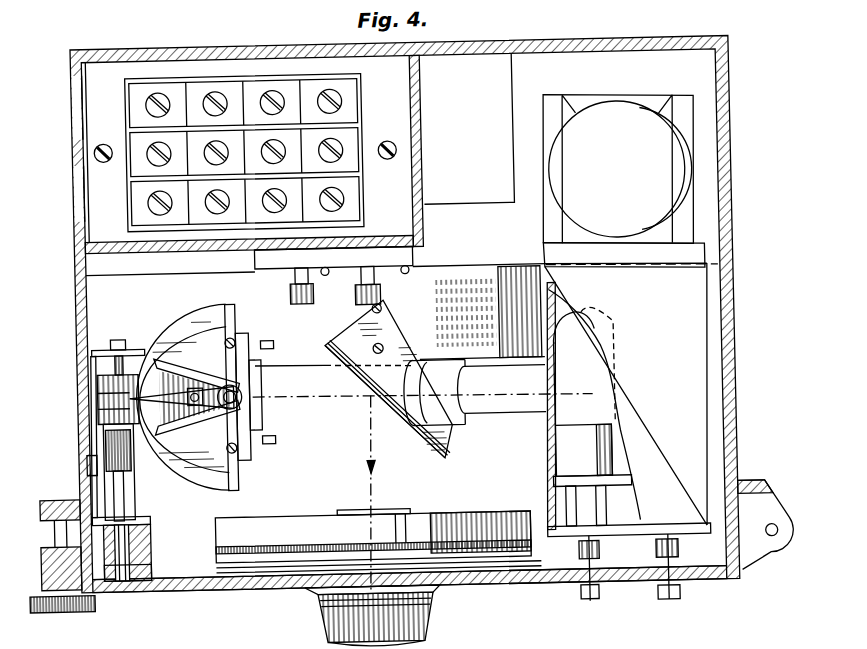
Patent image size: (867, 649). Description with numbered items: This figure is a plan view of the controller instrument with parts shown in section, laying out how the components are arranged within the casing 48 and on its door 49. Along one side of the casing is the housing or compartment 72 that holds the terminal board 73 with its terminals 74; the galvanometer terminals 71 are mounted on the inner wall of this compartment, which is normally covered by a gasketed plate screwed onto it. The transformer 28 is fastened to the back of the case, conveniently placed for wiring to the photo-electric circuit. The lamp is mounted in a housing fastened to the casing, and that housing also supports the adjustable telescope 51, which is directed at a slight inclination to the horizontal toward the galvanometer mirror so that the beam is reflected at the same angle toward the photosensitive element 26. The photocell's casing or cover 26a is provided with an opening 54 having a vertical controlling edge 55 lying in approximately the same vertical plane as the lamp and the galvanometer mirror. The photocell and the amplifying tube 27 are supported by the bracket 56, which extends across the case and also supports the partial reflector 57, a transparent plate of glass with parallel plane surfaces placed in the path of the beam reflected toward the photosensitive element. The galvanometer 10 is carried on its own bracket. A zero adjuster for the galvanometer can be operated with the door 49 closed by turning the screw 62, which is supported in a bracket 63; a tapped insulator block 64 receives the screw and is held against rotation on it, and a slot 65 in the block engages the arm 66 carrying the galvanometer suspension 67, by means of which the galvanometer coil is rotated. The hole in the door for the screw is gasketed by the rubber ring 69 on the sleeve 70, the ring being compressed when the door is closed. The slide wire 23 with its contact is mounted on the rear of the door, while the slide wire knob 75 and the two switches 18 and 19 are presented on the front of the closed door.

The galvanometer 10 is at (258, 428).
The switch 18 is at (660, 612).
The switch 19 is at (580, 612).
The slide wire 23 is at (448, 555).
The photosensitive element 26 is at (590, 365).
The photocell casing 26a is at (697, 445).
The amplifying tube 27 is at (622, 130).
The transformer 28 is at (511, 83).
The casing 48 is at (728, 300).
The door 49 is at (236, 593).
The telescope 51 is at (444, 440).
The opening 54 is at (541, 352).
The controlling edge 55 is at (520, 406).
The bracket 56 is at (500, 290).
The partial reflector 57 is at (392, 445).
The zero adjusting screw 62 is at (97, 445).
The bracket 63 is at (106, 351).
The insulator block 64 is at (90, 395).
The slot 65 is at (122, 400).
The arm 66 is at (178, 386).
The galvanometer suspension 67 is at (218, 408).
The rubber ring 69 is at (140, 545).
The sleeve 70 is at (140, 575).
The galvanometer terminals 71 is at (350, 300).
The compartment 72 is at (420, 250).
The terminal board 73 is at (328, 62).
The terminals 74 is at (200, 85).
The slide wire knob 75 is at (416, 636).